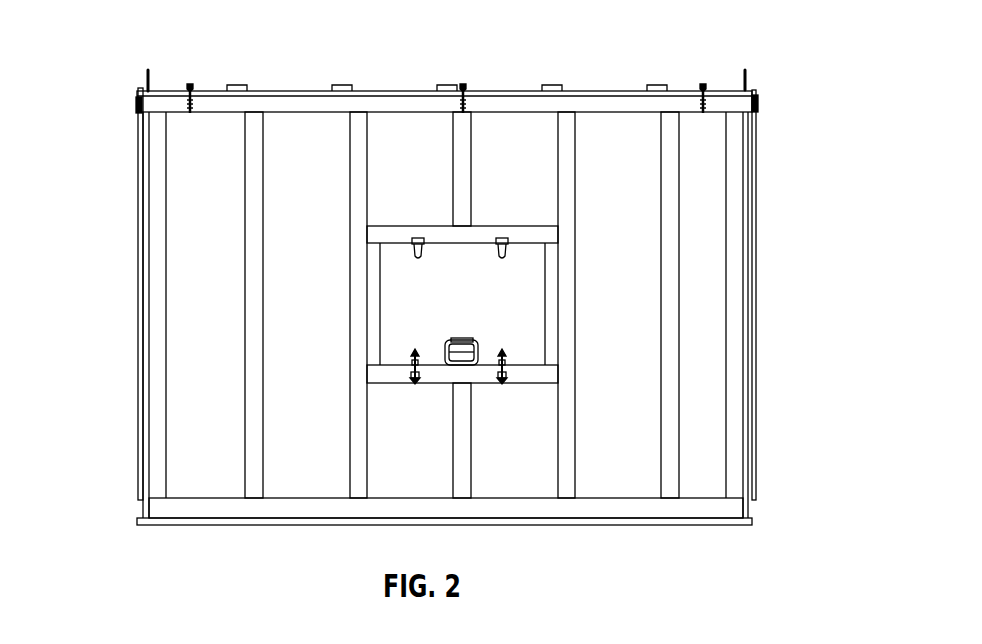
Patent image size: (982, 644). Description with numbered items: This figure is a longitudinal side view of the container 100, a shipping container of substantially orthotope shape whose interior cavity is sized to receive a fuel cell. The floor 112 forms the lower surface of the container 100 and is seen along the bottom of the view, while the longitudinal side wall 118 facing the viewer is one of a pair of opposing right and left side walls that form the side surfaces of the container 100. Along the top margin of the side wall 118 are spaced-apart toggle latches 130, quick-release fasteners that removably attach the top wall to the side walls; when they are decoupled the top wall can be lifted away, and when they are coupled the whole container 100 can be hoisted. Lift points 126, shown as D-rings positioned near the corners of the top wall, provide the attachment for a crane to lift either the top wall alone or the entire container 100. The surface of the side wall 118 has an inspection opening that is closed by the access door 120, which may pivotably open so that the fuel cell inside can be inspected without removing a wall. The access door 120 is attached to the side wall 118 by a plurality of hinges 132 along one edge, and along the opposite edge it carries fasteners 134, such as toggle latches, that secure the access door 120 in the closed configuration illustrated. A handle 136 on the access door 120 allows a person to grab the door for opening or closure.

The container 100 is at (120, 48).
The floor 112 is at (182, 543).
The longitudinal side wall 118 is at (185, 268).
The access door 120 is at (492, 307).
The lift point 126 is at (755, 70).
The toggle latch 130 is at (693, 98).
The hinge 132 is at (418, 236).
The fastener 134 is at (417, 385).
The handle 136 is at (465, 340).